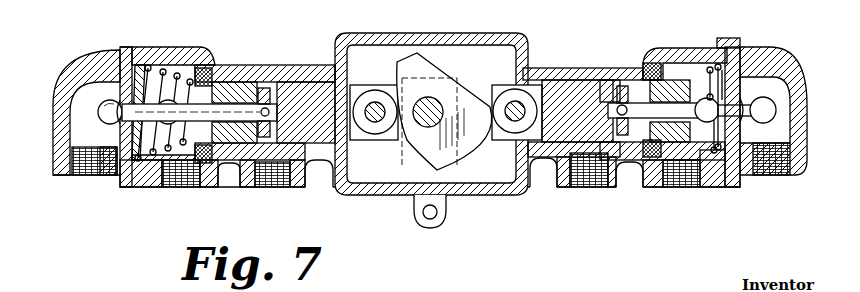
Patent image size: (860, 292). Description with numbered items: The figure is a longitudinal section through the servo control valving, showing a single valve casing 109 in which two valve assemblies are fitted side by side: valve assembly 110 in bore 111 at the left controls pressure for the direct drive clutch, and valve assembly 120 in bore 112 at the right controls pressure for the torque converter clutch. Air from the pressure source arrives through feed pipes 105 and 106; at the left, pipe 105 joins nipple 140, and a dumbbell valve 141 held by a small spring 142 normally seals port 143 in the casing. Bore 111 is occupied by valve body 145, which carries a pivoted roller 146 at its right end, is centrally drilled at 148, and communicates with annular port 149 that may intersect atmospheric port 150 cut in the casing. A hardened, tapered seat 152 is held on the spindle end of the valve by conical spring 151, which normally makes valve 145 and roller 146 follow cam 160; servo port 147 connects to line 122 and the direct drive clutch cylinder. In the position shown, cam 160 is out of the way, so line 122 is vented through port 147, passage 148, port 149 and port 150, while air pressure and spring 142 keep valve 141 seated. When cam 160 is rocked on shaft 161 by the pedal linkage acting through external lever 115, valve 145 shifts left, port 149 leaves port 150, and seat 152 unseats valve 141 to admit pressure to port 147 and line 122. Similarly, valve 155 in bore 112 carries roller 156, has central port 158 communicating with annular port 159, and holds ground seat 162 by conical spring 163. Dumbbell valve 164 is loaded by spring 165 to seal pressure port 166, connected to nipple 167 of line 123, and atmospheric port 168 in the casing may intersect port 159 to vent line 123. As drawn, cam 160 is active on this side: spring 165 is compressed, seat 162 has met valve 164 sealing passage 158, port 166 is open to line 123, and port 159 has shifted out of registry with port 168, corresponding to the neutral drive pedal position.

The air pressure feed pipe 105 is at (107, 170).
The air pressure feed pipe 106 is at (776, 177).
The valve casing 109 is at (337, 36).
The valve assembly 110 is at (134, 44).
The bore 111 is at (320, 68).
The bore 112 is at (601, 68).
The external lever 115 is at (413, 207).
The valve assembly 120 is at (747, 42).
The servo line 122 is at (202, 190).
The servo line 123 is at (697, 190).
The nipple 140 is at (96, 178).
The dumbbell valve 141 is at (99, 110).
The small spring 142 is at (134, 100).
The port 143 is at (118, 92).
The valve body 145 is at (290, 95).
The pivoted roller 146 is at (371, 95).
The servo port 147 is at (182, 188).
The central passage 148 is at (241, 104).
The annular port 149 is at (289, 152).
The atmospheric port 150 is at (248, 188).
The conical spring 151 is at (143, 178).
The hardened seat 152 is at (207, 68).
The valve 155 is at (576, 95).
The roller 156 is at (512, 93).
The central port 158 is at (651, 103).
The annular port 159 is at (626, 162).
The cam 160 is at (470, 108).
The shaft 161 is at (432, 98).
The ground seat 162 is at (701, 99).
The conical spring 163 is at (723, 66).
The dumbbell valve 164 is at (768, 106).
The spring 165 is at (746, 85).
The pressure port 166 is at (718, 165).
The nipple 167 is at (688, 190).
The atmospheric port 168 is at (583, 184).